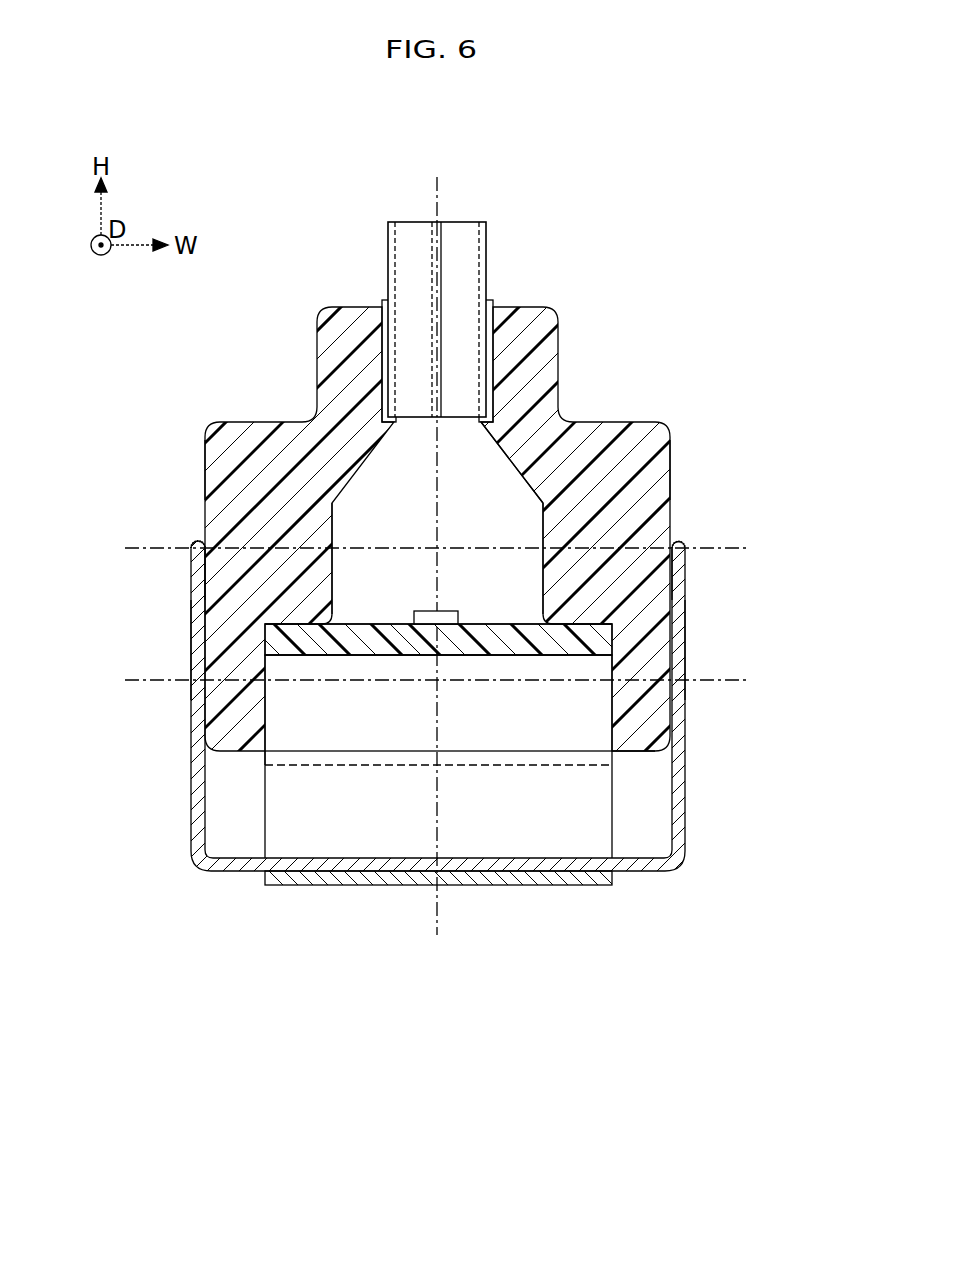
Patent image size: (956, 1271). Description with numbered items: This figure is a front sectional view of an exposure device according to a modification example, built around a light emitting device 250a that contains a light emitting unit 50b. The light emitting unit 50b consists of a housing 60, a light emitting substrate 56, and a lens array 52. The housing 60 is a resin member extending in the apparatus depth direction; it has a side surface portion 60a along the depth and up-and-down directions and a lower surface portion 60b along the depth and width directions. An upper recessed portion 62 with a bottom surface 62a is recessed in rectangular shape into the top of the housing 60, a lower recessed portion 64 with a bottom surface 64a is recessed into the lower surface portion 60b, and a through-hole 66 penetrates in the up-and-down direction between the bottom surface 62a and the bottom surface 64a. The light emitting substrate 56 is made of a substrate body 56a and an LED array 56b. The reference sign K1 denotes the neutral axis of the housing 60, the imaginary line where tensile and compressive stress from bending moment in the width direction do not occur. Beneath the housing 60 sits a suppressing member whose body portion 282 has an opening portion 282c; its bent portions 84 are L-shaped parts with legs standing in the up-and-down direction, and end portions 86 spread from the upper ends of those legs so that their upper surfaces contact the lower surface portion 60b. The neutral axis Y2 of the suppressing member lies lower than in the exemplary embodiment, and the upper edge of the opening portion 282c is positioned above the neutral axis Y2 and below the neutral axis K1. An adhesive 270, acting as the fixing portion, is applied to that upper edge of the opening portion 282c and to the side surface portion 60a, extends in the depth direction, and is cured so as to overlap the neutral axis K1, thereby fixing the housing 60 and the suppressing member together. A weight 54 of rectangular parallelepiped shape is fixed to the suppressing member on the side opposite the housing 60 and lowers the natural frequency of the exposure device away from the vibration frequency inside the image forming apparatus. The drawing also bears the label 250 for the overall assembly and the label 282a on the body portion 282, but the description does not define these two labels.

The light emitting unit 50b is at (633, 303).
The lens array 52 is at (464, 221).
The upper recessed portion 62 is at (484, 308).
The bottom surface 62a is at (479, 426).
The housing 60 is at (553, 308).
The side surface portion 60a is at (205, 462).
The lower surface portion 60b is at (634, 749).
The through-hole 66 is at (506, 522).
The adhesive 270 is at (196, 540).
The body portion 282 is at (680, 872).
The holder side wall 282a is at (191, 652).
The opening portion 282c is at (200, 574).
The light emitting substrate 56 is at (339, 662).
The substrate body 56a is at (384, 658).
The LED array 56b is at (416, 611).
The lower recessed portion 64 is at (612, 710).
The bottom surface 64a is at (542, 612).
The bent portion 84 is at (265, 817).
The end portion 86 is at (265, 755).
The weight 54 is at (553, 886).
The holder assembly 250 is at (721, 1023).
The light emitting device 250a is at (669, 938).
The neutral axis K1 is at (746, 547).
The neutral axis Y2 is at (748, 690).